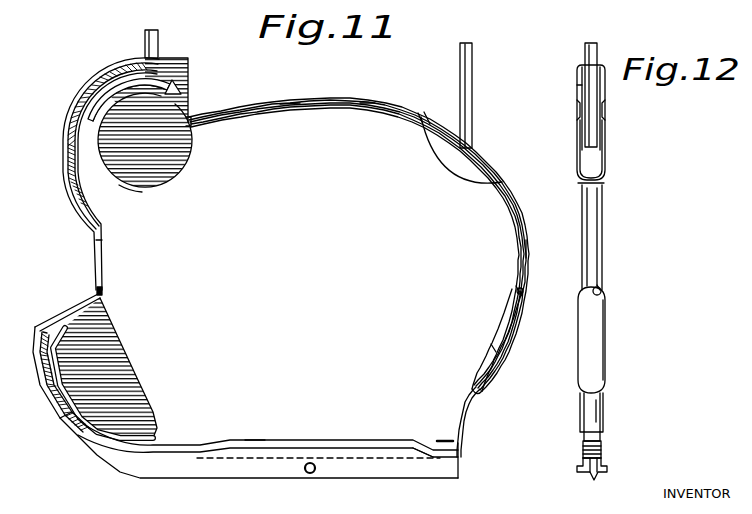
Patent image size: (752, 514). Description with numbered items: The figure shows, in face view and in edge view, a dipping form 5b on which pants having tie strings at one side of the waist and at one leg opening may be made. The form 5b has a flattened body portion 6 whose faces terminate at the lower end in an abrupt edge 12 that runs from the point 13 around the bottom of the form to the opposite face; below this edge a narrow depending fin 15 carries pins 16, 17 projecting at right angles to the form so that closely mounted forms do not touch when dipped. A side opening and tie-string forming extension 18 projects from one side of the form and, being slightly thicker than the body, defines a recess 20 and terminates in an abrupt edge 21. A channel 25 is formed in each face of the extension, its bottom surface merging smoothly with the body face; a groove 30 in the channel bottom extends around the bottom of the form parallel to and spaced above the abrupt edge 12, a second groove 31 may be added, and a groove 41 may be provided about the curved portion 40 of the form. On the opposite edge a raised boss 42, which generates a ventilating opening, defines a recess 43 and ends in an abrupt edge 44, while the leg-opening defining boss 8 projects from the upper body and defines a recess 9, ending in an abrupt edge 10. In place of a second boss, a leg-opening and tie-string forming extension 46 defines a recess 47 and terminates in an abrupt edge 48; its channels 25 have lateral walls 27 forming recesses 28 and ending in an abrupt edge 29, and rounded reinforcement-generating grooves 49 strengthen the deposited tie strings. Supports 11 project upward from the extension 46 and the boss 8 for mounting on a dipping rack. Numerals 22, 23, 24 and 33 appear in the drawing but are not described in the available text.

In FIG. 11, the form 5b is at (367, 107).
In FIG. 12, the form 5b is at (578, 88).
In FIG. 11, the body portion 6 is at (515, 216).
In FIG. 12, the body portion 6 is at (604, 202).
In FIG. 11, the leg-opening defining boss 8 is at (436, 130).
In FIG. 12, the leg-opening defining boss 8 is at (601, 156).
In FIG. 11, the recess 9 is at (420, 116).
In FIG. 11, the abrupt edge 10 is at (427, 112).
In FIG. 11, the supports or hangers 11 is at (152, 44).
In FIG. 12, the supports or hangers 11 is at (597, 47).
In FIG. 11, the abrupt edge 12 is at (375, 457).
In FIG. 12, the abrupt edge 12 is at (601, 464).
In FIG. 11, the point 13 is at (83, 430).
In FIG. 11, the depending fin 15 is at (277, 468).
In FIG. 12, the depending fin 15 is at (595, 478).
In FIG. 12, the pin 16 is at (582, 473).
In FIG. 12, the pin 17 is at (608, 470).
In FIG. 11, the side opening and tie-string forming extension 18 is at (60, 306).
In FIG. 12, the side opening and tie-string forming extension 18 is at (598, 408).
In FIG. 11, the recess 20 is at (98, 287).
In FIG. 11, the abrupt edge 21 is at (113, 331).
In FIG. 11, the frame rail 22 is at (283, 106).
In FIG. 12, the frame rail 22 is at (606, 112).
In FIG. 11, the connecting strip 23 is at (95, 245).
In FIG. 11, the frame rib 24 is at (527, 247).
In FIG. 12, the frame rib 24 is at (603, 244).
In FIG. 11, the channel 25 is at (186, 88).
In FIG. 11, the lateral wall 27 is at (73, 131).
In FIG. 11, the recess 28 is at (75, 154).
In FIG. 11, the abrupt edge 29 is at (72, 172).
In FIG. 11, the groove 30 is at (157, 451).
In FIG. 12, the groove 30 is at (583, 454).
In FIG. 11, the second groove 31 is at (154, 440).
In FIG. 11, the bottom rail 33 is at (254, 443).
In FIG. 11, the curved portion 40 is at (470, 411).
In FIG. 12, the curved portion 40 is at (605, 416).
In FIG. 11, the groove 41 is at (462, 440).
In FIG. 12, the groove 41 is at (603, 441).
In FIG. 11, the raised boss 42 is at (497, 360).
In FIG. 12, the raised boss 42 is at (603, 340).
In FIG. 11, the recess 43 is at (522, 290).
In FIG. 12, the recess 43 is at (600, 290).
In FIG. 11, the abrupt edge 44 is at (560, 302).
In FIG. 12, the abrupt edge 44 is at (605, 293).
In FIG. 11, the leg-opening and tie-string forming extension 46 is at (182, 58).
In FIG. 12, the leg-opening and tie-string forming extension 46 is at (580, 64).
In FIG. 11, the recess 47 is at (193, 118).
In FIG. 11, the abrupt edge 48 is at (185, 148).
In FIG. 11, the reinforcement-generating groove 49 is at (125, 198).